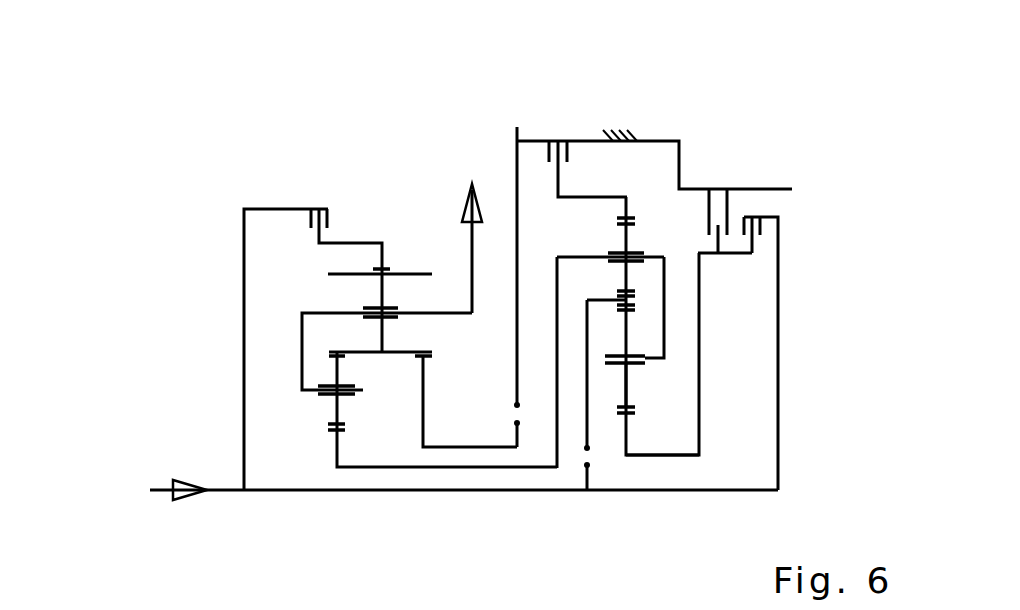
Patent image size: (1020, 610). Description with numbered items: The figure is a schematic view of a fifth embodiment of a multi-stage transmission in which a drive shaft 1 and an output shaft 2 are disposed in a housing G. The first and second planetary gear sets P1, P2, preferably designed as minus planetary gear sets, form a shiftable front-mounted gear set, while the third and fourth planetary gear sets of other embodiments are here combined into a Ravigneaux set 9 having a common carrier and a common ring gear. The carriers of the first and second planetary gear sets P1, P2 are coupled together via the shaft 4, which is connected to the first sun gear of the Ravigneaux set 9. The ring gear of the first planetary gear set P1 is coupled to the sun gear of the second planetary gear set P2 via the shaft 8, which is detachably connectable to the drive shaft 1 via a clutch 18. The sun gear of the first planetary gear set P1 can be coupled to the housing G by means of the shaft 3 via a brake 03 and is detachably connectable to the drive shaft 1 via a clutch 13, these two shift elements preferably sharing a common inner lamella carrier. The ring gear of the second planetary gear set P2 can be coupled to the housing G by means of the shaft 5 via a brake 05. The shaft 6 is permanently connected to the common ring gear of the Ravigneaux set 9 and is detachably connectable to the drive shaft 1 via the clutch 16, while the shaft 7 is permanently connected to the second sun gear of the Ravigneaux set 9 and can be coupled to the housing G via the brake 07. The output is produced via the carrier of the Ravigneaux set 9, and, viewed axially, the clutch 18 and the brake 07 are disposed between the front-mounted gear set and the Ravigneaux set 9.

The drive shaft 1 is at (280, 492).
The output shaft 2 is at (322, 310).
The shaft 3 is at (660, 457).
The shaft 4 is at (355, 467).
The shaft 5 is at (608, 197).
The shaft 6 is at (355, 243).
The shaft 7 is at (438, 447).
The shaft 8 is at (605, 300).
The Ravigneaux set 9 is at (405, 252).
The clutch 13 is at (761, 216).
The clutch 16 is at (321, 228).
The clutch 18 is at (589, 461).
The brake 03 is at (718, 193).
The brake 05 is at (560, 147).
The brake 07 is at (519, 414).
The housing G is at (635, 130).
The first planetary gear set P1 is at (655, 398).
The second planetary gear set P2 is at (646, 229).